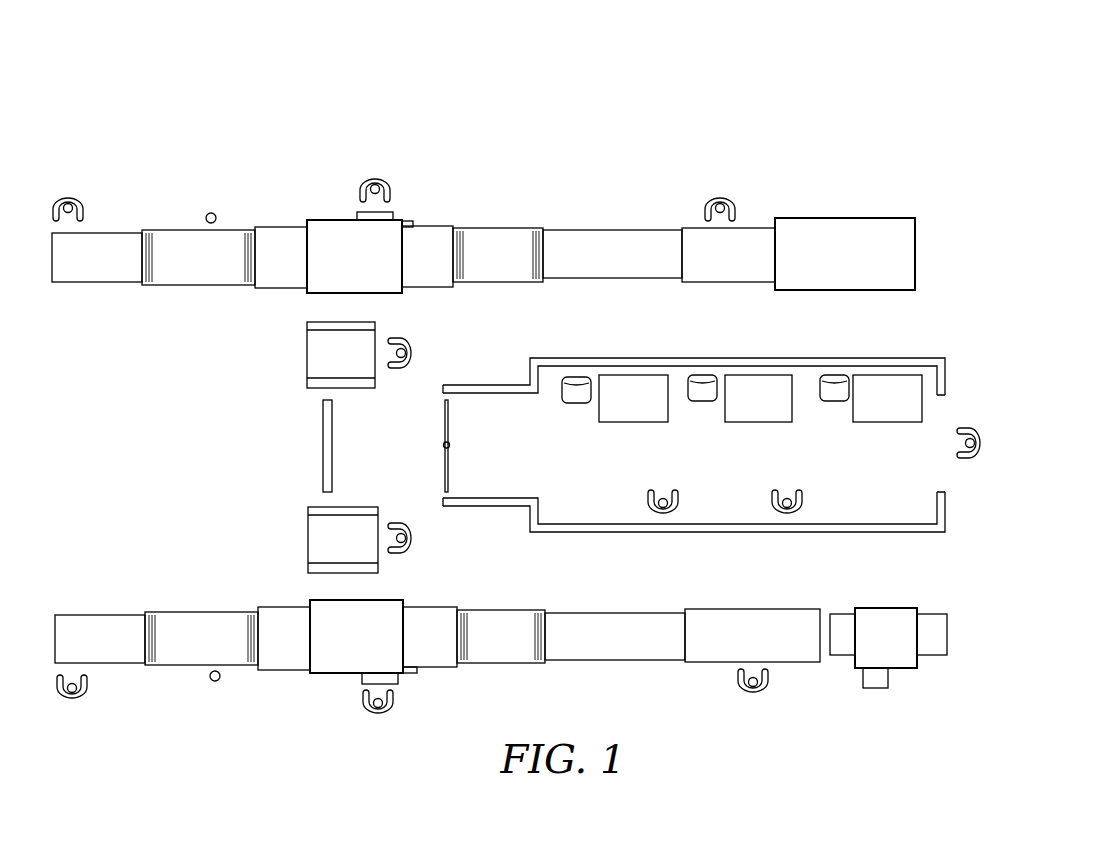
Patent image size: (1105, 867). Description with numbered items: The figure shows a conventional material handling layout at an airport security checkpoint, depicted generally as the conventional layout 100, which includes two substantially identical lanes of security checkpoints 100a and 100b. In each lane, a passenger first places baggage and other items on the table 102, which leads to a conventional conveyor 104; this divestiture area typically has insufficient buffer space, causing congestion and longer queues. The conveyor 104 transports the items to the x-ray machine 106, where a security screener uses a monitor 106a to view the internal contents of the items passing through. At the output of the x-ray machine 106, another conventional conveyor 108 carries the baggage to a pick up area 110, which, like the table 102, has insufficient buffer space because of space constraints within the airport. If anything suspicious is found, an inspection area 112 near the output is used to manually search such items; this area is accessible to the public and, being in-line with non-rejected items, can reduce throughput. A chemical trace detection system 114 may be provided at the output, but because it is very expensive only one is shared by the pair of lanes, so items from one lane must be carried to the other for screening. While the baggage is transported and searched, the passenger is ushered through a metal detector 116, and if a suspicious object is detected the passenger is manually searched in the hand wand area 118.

The conventional layout 100 is at (820, 105).
The security checkpoint lane 100a is at (957, 237).
The security checkpoint lane 100b is at (977, 640).
The table 102 is at (123, 218).
The conveyor 104 is at (188, 222).
The x-ray machine 106 is at (330, 215).
The monitor 106a is at (398, 207).
The conveyor 108 is at (483, 223).
The pick up area 110 is at (587, 225).
The inspection area 112 is at (750, 225).
The chemical trace detection system 114 is at (863, 215).
The metal detector 116 is at (290, 355).
The hand wand area 118 is at (948, 415).